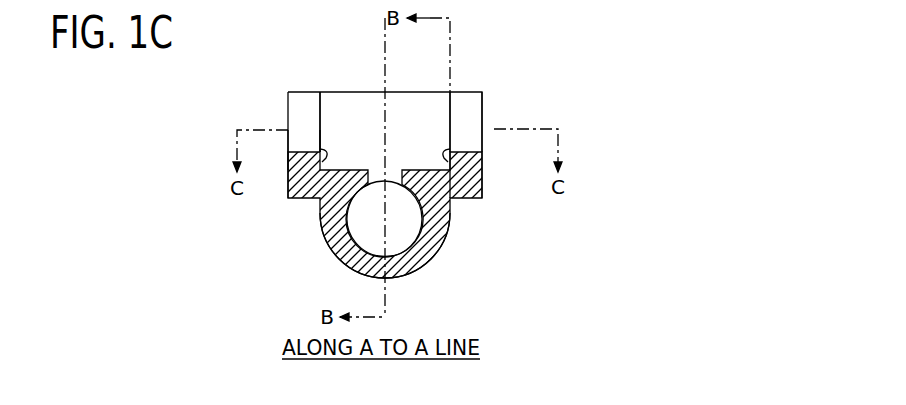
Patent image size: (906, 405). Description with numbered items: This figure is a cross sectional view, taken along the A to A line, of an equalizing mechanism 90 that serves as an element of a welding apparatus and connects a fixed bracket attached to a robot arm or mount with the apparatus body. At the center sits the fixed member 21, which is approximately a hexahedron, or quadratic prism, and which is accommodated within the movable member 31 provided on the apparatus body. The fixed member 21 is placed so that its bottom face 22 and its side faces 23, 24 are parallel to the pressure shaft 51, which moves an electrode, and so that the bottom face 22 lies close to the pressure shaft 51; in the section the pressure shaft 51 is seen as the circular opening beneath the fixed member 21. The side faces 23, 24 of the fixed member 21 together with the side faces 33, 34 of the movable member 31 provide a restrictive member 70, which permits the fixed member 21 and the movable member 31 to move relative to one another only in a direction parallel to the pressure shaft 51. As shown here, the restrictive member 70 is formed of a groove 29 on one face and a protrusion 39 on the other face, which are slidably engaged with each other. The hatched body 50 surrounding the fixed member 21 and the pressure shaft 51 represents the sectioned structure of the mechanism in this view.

The equalizing mechanism 90 is at (667, 72).
The housing body 50 is at (307, 240).
The fixed member 21 is at (432, 98).
The bottom face 22 is at (449, 211).
The side face 23 is at (318, 112).
The side face 24 is at (451, 112).
The groove 29 is at (319, 137).
The movable member 31 is at (472, 138).
The side face 33 is at (323, 156).
The side face 34 is at (447, 157).
The protrusion 39 is at (290, 157).
The pressure shaft 51 is at (403, 238).
The restrictive member 70 is at (194, 95).